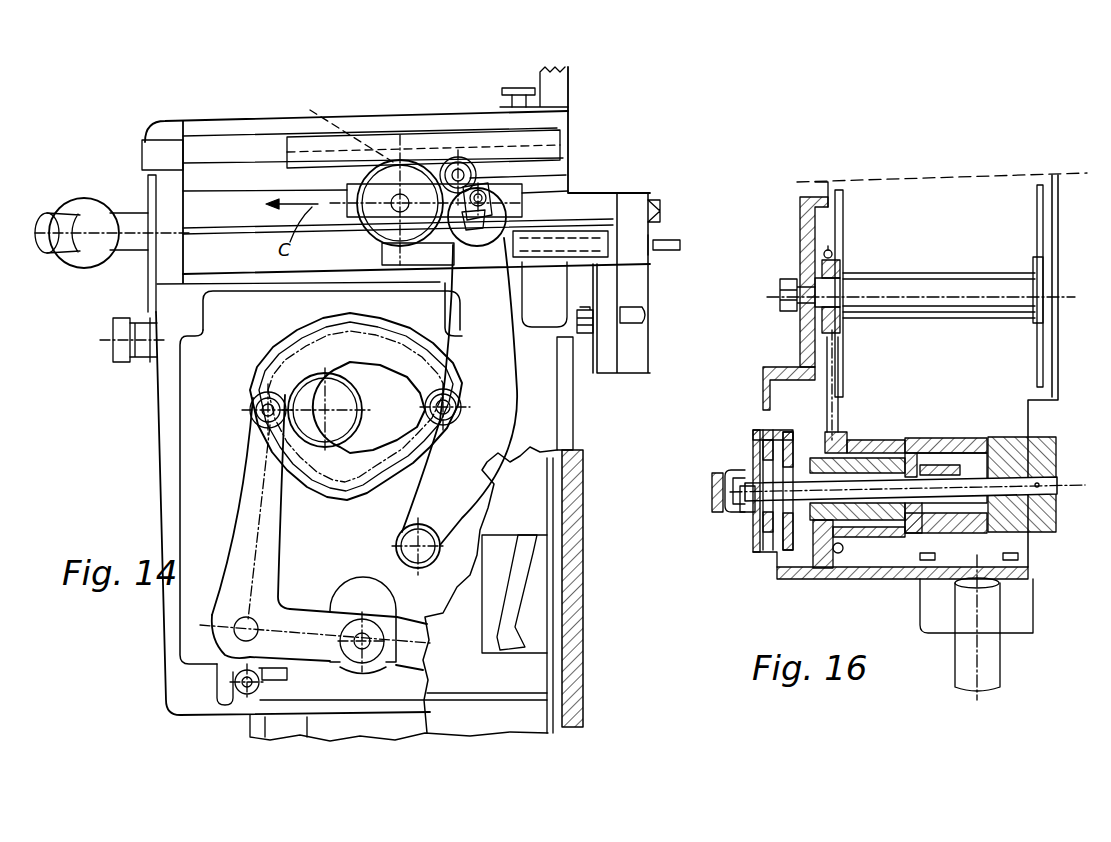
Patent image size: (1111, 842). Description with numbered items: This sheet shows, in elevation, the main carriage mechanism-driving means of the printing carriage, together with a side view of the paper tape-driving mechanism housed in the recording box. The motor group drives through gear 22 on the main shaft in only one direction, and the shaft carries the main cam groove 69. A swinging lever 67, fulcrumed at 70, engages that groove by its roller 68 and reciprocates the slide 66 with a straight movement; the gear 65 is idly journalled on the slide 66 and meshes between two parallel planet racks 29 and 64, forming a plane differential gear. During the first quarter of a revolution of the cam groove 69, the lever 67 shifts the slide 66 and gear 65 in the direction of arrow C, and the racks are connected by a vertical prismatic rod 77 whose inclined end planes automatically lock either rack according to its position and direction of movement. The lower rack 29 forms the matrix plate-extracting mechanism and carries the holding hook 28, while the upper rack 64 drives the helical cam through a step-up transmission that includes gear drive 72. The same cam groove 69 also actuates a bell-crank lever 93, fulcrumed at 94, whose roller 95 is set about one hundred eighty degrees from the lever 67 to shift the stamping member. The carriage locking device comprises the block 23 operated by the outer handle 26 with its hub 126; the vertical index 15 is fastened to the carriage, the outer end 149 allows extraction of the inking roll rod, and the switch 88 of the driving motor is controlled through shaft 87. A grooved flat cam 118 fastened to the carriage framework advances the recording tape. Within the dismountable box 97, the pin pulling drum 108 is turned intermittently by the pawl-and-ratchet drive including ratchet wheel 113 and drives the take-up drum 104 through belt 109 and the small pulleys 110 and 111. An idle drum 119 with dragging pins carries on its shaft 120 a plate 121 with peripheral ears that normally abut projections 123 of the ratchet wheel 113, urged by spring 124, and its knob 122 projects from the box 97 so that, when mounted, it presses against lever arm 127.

In FIG. 14, the vertical index 15 is at (560, 84).
In FIG. 14, the gear 22 is at (350, 412).
In FIG. 14, the block 23 is at (660, 210).
In FIG. 14, the outer handle 26 is at (87, 207).
In FIG. 14, the hook 28 is at (672, 250).
In FIG. 14, the lower rack 29 is at (535, 262).
In FIG. 14, the upper rack 64 is at (540, 147).
In FIG. 14, the gear 65 is at (372, 231).
In FIG. 14, the slide 66 is at (516, 194).
In FIG. 14, the swinging lever 67 is at (503, 362).
In FIG. 14, the roller 68 is at (449, 418).
In FIG. 14, the cam groove 69 is at (293, 353).
In FIG. 14, the fulcrum 70 is at (396, 540).
In FIG. 14, the gear drive 72 is at (457, 158).
In FIG. 14, the vertical prismatic rod 77 is at (338, 126).
In FIG. 14, the shaft 87 is at (236, 680).
In FIG. 14, the switch 88 is at (287, 676).
In FIG. 14, the bell-crank lever 93 is at (252, 510).
In FIG. 14, the fulcrum 94 is at (238, 620).
In FIG. 14, the roller 95 is at (253, 414).
In FIG. 14, the grooved flat cam 118 is at (530, 583).
In FIG. 14, the hub 126 is at (126, 243).
In FIG. 14, the outer end 149 is at (119, 351).
In FIG. 16, the box 97 is at (823, 180).
In FIG. 16, the drum 104 is at (940, 280).
In FIG. 16, the pin pulling drum 108 is at (935, 437).
In FIG. 16, the belt 109 is at (830, 357).
In FIG. 16, the small pulley 110 is at (822, 268).
In FIG. 16, the small pulley 111 is at (843, 556).
In FIG. 16, the ratchet wheel 113 is at (786, 442).
In FIG. 16, the idle drum 119 is at (1055, 505).
In FIG. 16, the shaft 120 is at (873, 480).
In FIG. 16, the plate 121 is at (758, 530).
In FIG. 16, the knob 122 is at (732, 470).
In FIG. 16, the projections 123 is at (768, 440).
In FIG. 16, the spring 124 is at (740, 512).
In FIG. 16, the lever arm 127 is at (710, 487).